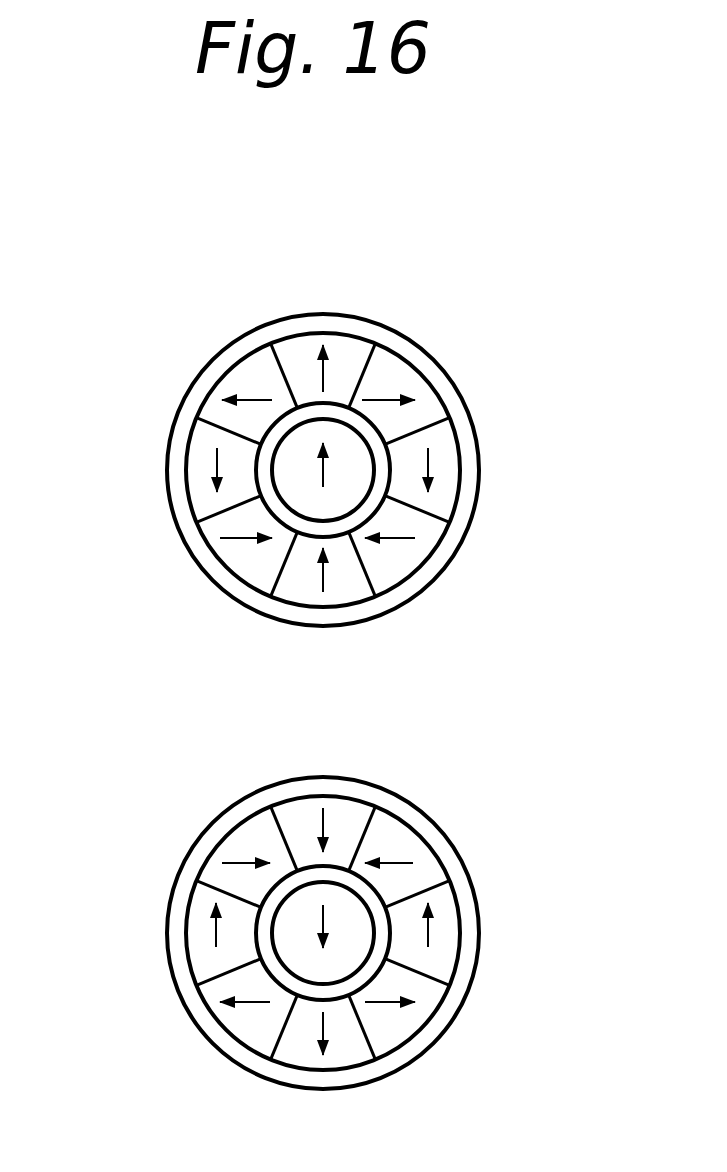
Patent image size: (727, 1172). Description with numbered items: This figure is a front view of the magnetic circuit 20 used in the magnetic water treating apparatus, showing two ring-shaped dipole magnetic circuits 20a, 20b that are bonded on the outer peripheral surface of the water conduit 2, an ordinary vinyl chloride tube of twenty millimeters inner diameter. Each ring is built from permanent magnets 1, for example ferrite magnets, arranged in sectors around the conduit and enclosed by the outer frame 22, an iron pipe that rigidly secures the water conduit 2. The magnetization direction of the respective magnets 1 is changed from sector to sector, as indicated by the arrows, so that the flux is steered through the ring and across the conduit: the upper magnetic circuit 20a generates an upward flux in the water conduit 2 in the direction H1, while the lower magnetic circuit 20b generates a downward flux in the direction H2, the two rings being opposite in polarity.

The permanent magnet 1 is at (340, 353).
The water conduit 2 is at (267, 503).
The magnetic circuit 20 is at (250, 1018).
The magnetic circuit 20a is at (431, 438).
The magnetic circuit 20b is at (232, 878).
The outer frame 22 is at (433, 380).
The magnetic flux direction H1 is at (357, 488).
The magnetic flux direction H2 is at (355, 929).